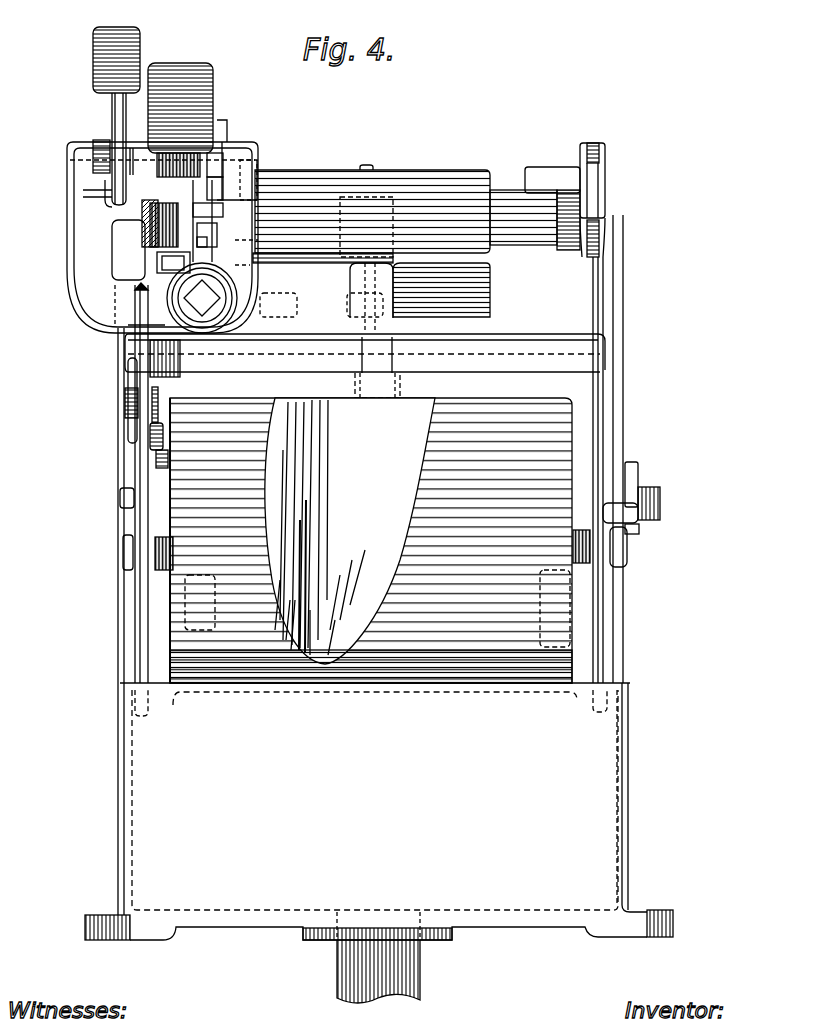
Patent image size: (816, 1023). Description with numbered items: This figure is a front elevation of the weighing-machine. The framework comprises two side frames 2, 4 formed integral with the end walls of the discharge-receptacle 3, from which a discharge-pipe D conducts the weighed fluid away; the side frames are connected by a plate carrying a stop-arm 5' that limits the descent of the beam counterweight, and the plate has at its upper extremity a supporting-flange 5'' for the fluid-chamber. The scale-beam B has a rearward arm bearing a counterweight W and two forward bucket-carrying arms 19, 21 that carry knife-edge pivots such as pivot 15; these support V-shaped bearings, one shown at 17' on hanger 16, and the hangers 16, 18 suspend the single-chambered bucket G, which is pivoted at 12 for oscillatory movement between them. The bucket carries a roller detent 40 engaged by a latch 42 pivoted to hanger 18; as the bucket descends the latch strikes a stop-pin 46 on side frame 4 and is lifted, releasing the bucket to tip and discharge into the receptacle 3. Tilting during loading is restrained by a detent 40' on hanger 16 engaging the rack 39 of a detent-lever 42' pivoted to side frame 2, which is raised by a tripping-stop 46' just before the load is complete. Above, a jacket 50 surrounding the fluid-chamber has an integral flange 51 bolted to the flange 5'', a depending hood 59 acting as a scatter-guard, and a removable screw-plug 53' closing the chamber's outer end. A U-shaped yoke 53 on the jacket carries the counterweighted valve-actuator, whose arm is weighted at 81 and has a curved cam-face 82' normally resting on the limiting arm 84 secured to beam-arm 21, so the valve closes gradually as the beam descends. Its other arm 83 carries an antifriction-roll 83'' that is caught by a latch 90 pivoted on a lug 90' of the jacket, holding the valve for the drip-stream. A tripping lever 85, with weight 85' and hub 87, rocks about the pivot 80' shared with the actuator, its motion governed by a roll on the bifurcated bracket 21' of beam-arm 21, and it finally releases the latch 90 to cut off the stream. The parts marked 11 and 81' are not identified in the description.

The side frame 2 is at (612, 430).
The discharge-receptacle 3 is at (162, 783).
The side frame 4 is at (120, 473).
The stop-arm 5' is at (347, 297).
The supporting-flange 5'' is at (365, 363).
The block 11 is at (170, 267).
The bucket pivot 12 is at (130, 557).
The knife edge pivot 15 is at (603, 202).
The hanger 16 is at (595, 295).
The V-shaped bearing 17' is at (615, 158).
The hanger 18 is at (140, 335).
The bucket-carrying arm 19 is at (577, 208).
The bucket-carrying arm 21 is at (94, 201).
The bifurcated bracket 21' is at (90, 170).
The rack 39 is at (650, 487).
The detent 40 is at (178, 461).
The detent 40' is at (670, 503).
The latch 42 is at (176, 418).
The detent-lever 42' is at (650, 476).
The stop-pin 46 is at (113, 498).
The tripping-stop 46' is at (652, 535).
The jacket 50 is at (232, 287).
The flange 51 is at (393, 303).
The U-shaped yoke 53 is at (151, 237).
The screw-plug 53' is at (144, 311).
The hood 59 is at (373, 380).
The common pivot 80' is at (252, 154).
The counterweight 81 is at (197, 108).
The hatched block 81' is at (138, 222).
The cam-face 82' is at (175, 172).
The arm 83 is at (224, 212).
The antifriction-roll 83'' is at (202, 283).
The limiting arm 84 is at (200, 178).
The tripping lever 85 is at (99, 146).
The weight 85' is at (100, 60).
The hub 87 is at (132, 143).
The limiting latch 90 is at (188, 226).
The bracket 90' is at (263, 243).
The scale-beam B is at (531, 257).
The discharge-pipe D is at (400, 966).
The bucket G is at (432, 512).
The counterweight W is at (406, 200).